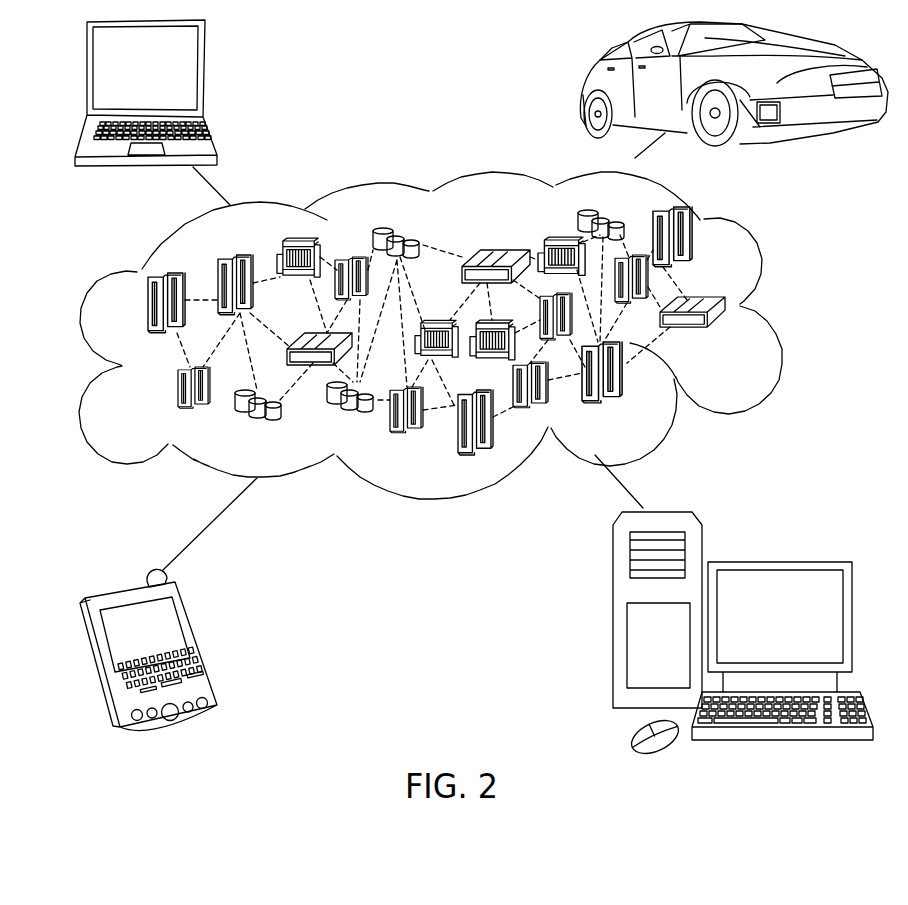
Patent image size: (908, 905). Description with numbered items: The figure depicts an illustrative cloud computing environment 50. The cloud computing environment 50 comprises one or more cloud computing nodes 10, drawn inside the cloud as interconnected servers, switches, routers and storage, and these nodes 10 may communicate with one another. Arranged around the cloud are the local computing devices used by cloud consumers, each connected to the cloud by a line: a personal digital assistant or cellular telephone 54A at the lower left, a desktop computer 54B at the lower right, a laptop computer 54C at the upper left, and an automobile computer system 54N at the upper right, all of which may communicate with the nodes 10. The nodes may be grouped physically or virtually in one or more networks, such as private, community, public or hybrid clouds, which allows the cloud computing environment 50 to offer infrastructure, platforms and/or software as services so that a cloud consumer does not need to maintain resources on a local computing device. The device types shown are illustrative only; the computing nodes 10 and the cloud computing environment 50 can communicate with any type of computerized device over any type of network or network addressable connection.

The cloud computing node 10 is at (727, 335).
The cloud computing environment 50 is at (777, 308).
The personal digital assistant (PDA) or cellular telephone 54A is at (203, 645).
The desktop computer 54B is at (777, 561).
The laptop computer 54C is at (203, 73).
The automobile computer system 54N is at (583, 86).